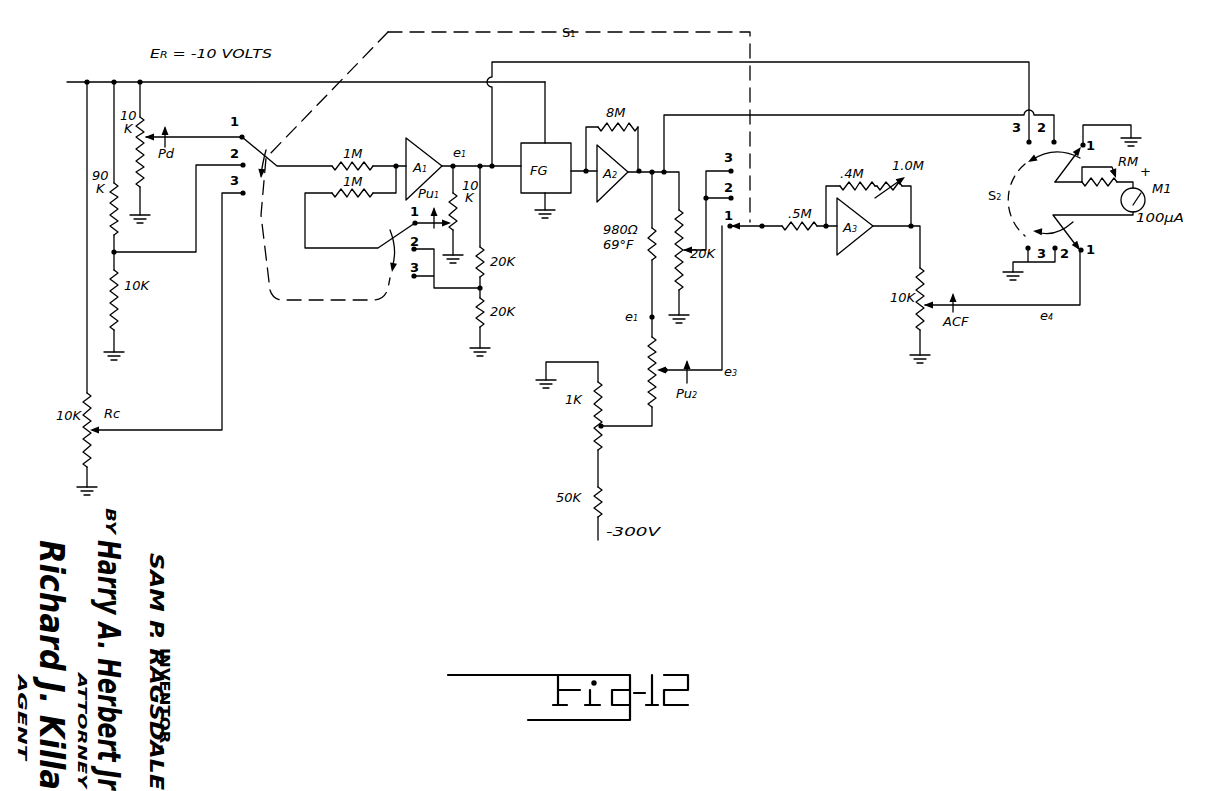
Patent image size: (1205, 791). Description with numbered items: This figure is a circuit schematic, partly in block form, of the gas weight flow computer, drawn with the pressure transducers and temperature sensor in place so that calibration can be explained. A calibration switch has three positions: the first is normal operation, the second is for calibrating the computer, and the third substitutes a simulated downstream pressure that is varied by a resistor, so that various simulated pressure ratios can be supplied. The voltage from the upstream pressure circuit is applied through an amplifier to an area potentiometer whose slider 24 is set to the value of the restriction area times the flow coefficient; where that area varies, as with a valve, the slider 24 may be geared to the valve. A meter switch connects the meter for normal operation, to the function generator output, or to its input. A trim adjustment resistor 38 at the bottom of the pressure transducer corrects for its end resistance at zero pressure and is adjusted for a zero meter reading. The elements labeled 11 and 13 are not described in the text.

The 10K potentiometer (Pu2 ganged resistor) 11 is at (665, 354).
The 980 ohm temperature-sensitive resistor (69°F) 13 is at (640, 252).
The area potentiometer slider 24 is at (1003, 306).
The trim adjustment resistor 38 is at (588, 420).